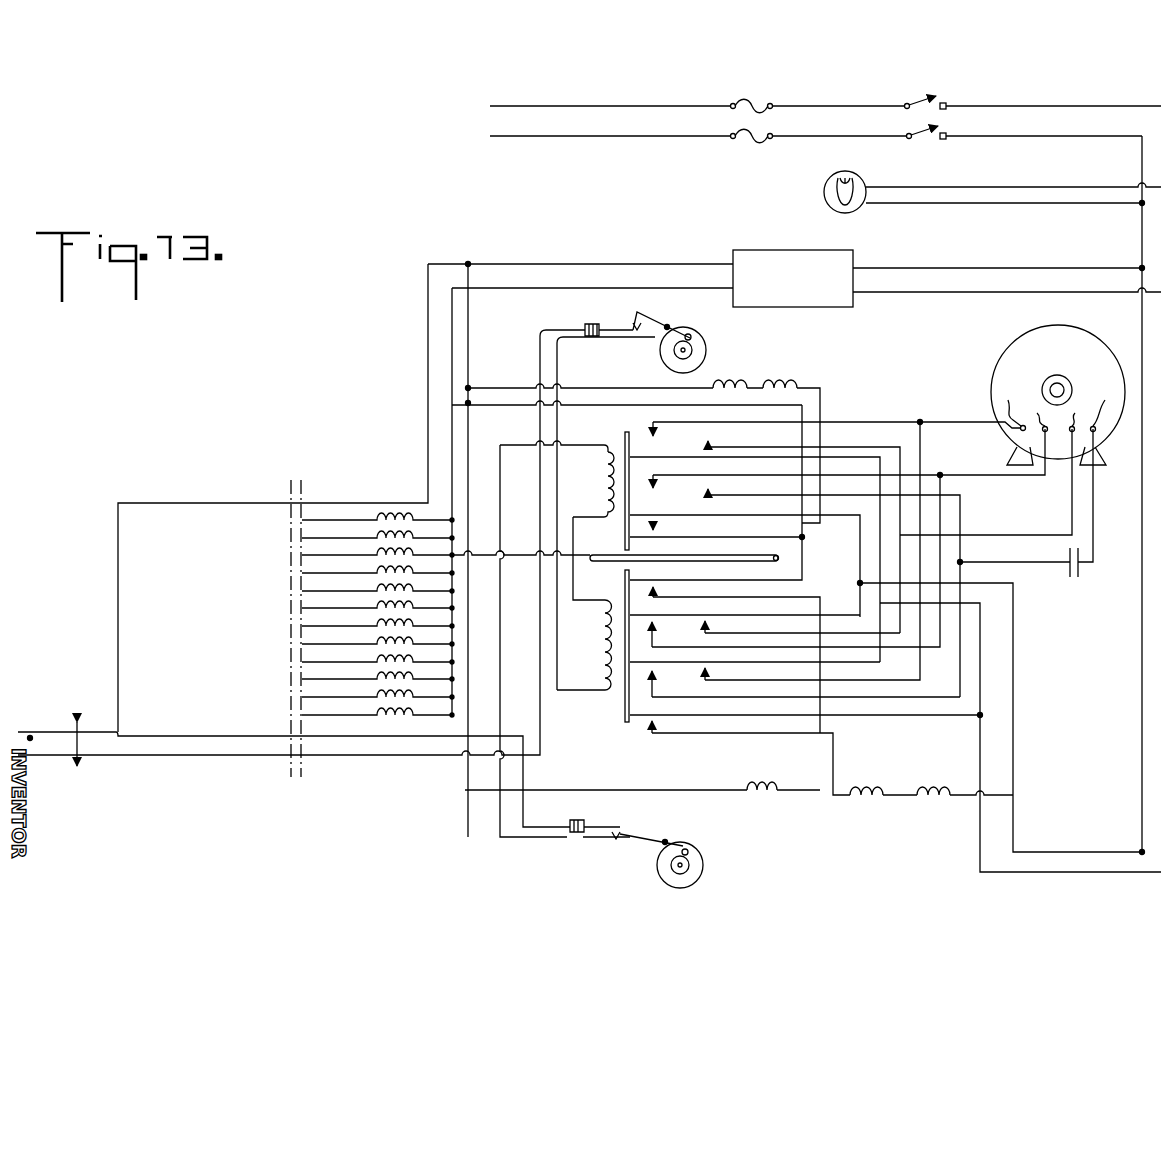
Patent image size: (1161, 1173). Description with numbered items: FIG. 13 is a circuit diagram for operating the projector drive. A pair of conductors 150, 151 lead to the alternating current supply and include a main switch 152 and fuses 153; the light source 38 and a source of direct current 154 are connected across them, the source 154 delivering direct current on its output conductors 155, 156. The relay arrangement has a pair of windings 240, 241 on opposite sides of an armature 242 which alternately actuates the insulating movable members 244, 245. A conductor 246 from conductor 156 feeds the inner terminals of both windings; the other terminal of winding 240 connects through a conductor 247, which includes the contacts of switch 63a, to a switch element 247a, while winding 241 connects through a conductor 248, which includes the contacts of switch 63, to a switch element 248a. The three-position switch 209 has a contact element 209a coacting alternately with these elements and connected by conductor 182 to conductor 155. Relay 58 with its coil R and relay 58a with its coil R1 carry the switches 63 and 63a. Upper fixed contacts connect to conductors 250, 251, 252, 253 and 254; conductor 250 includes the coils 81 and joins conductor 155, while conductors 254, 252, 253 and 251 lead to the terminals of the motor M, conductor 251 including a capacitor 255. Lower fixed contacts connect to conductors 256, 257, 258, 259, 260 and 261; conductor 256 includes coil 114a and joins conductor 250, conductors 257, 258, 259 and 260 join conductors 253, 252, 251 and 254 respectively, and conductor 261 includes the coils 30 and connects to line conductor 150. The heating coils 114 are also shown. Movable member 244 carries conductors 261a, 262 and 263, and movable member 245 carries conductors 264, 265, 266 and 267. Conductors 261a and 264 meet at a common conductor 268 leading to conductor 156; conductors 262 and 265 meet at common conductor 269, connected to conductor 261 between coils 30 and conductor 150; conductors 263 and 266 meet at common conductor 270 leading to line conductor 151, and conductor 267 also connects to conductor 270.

The fuses 153 is at (750, 104).
The main switch 152 is at (942, 142).
The light source 38 is at (824, 190).
The source of direct current 154 is at (805, 250).
The conductor 155 is at (596, 264).
The conductor 156 is at (478, 290).
The conductor 151 is at (1160, 222).
The conductor 150 is at (1142, 316).
The conductor 182 is at (430, 262).
The conductor 250 is at (470, 327).
The conductor 248 is at (235, 780).
The switch 63 is at (630, 320).
The relay 58 is at (657, 320).
The relay R is at (712, 340).
The coils 81 is at (787, 380).
The motor M is at (1012, 333).
The conductor 254 is at (663, 425).
The conductor 253 is at (740, 443).
The conductor 263 is at (683, 458).
The conductor 252 is at (663, 477).
The conductor 251 is at (743, 493).
The conductor 262 is at (680, 508).
The conductor 261a is at (688, 540).
The conductor 264 is at (663, 578).
The common conductor 268 is at (688, 409).
The conductor 256 is at (470, 418).
The conductor 265 is at (660, 614).
The conductor 257 is at (755, 634).
The conductor 258 is at (730, 647).
The conductor 266 is at (653, 662).
The conductor 259 is at (755, 681).
The conductor 260 is at (730, 697).
The conductor 267 is at (655, 715).
The conductor 261 is at (727, 734).
The coils 30 is at (927, 800).
The common conductor 269 is at (988, 584).
The common conductor 270 is at (970, 604).
The capacitor 255 is at (1075, 580).
The movable member 244 is at (625, 434).
The movable member 245 is at (626, 724).
The armature 242 is at (612, 562).
The conductor 246 is at (510, 557).
The conductor 247 is at (217, 732).
The winding 240 is at (604, 495).
The winding 241 is at (603, 643).
The heating coils 114 is at (372, 536).
The coil 114a is at (763, 787).
The switch element 247a is at (30, 730).
The contact element 209a is at (76, 716).
The three-position switch 209 is at (88, 762).
The switch element 248a is at (27, 757).
The switch 63a is at (640, 812).
The relay 58a is at (642, 845).
The relay R1 is at (708, 880).